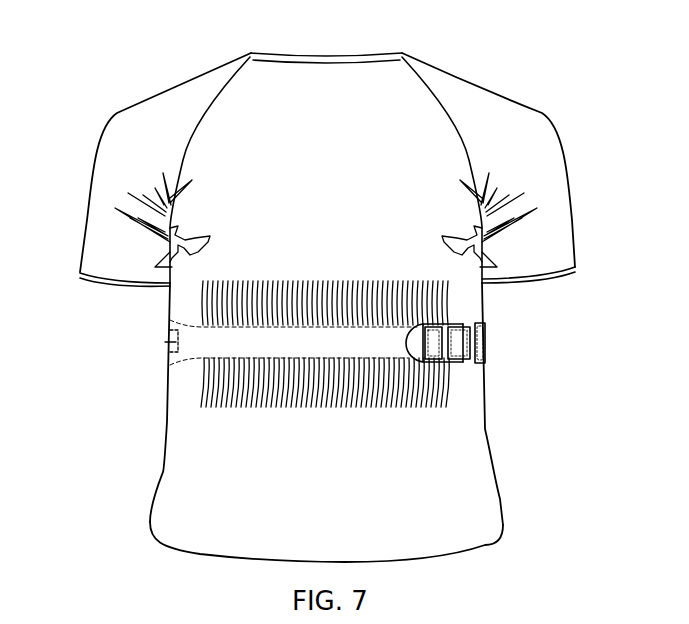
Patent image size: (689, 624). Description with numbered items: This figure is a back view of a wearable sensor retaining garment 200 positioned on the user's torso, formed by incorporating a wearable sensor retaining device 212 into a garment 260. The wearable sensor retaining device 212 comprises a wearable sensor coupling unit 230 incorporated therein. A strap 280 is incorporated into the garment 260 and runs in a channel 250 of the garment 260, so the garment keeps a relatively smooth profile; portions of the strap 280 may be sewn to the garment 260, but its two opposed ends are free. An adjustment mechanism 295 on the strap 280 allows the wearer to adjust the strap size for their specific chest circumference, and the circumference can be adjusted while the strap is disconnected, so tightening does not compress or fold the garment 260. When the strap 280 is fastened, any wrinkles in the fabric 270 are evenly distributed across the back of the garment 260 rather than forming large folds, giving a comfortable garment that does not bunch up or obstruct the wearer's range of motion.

The wearable sensor retaining garment 200 is at (133, 57).
The wearable sensor retaining device 212 is at (494, 372).
The wearable sensor coupling unit 230 is at (168, 342).
The channel 250 is at (346, 340).
The garment 260 is at (459, 512).
The fabric 270 is at (253, 389).
The strap 280 is at (485, 345).
The adjustment mechanism 295 is at (410, 335).